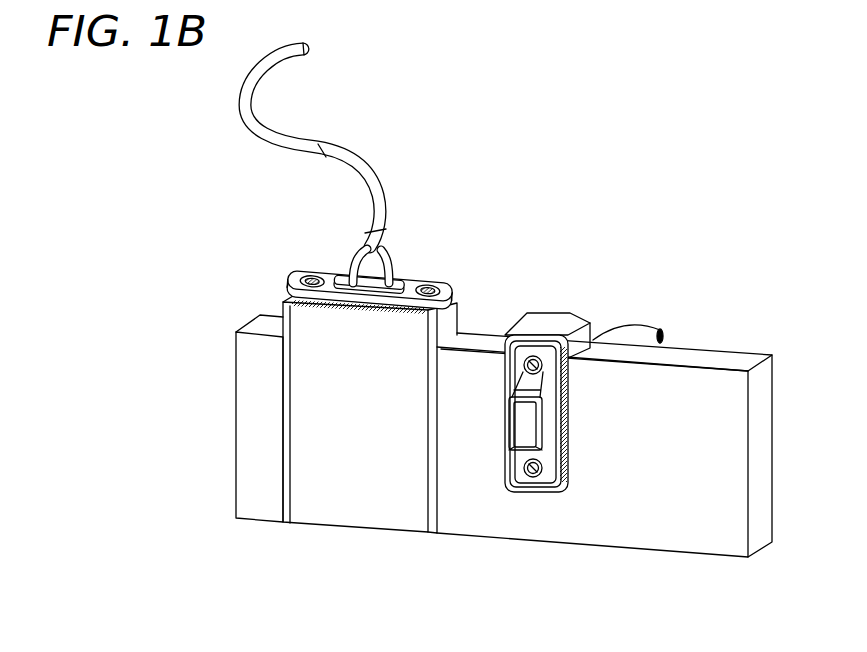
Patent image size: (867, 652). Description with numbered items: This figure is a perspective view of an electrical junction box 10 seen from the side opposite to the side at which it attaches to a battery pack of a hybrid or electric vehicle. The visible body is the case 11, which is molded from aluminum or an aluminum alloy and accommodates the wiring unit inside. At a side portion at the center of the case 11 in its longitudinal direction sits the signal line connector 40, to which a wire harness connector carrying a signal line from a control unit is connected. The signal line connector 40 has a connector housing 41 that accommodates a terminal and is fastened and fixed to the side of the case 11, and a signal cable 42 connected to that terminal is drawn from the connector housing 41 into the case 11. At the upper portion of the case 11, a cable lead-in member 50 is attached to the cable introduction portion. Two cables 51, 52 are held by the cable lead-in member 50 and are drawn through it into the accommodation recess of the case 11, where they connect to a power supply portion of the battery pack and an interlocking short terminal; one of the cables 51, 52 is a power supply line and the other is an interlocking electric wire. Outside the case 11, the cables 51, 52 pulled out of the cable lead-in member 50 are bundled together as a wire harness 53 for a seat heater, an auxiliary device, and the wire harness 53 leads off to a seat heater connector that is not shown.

The electrical junction box 10 is at (268, 238).
The case 11 is at (229, 445).
The signal line connector 40 is at (505, 430).
The connector housing 41 is at (543, 427).
The signal cable 42 is at (638, 337).
The cable lead-in member 50 is at (396, 280).
The cable 51 is at (393, 257).
The cable 52 is at (349, 270).
The wire harness 53 is at (348, 157).